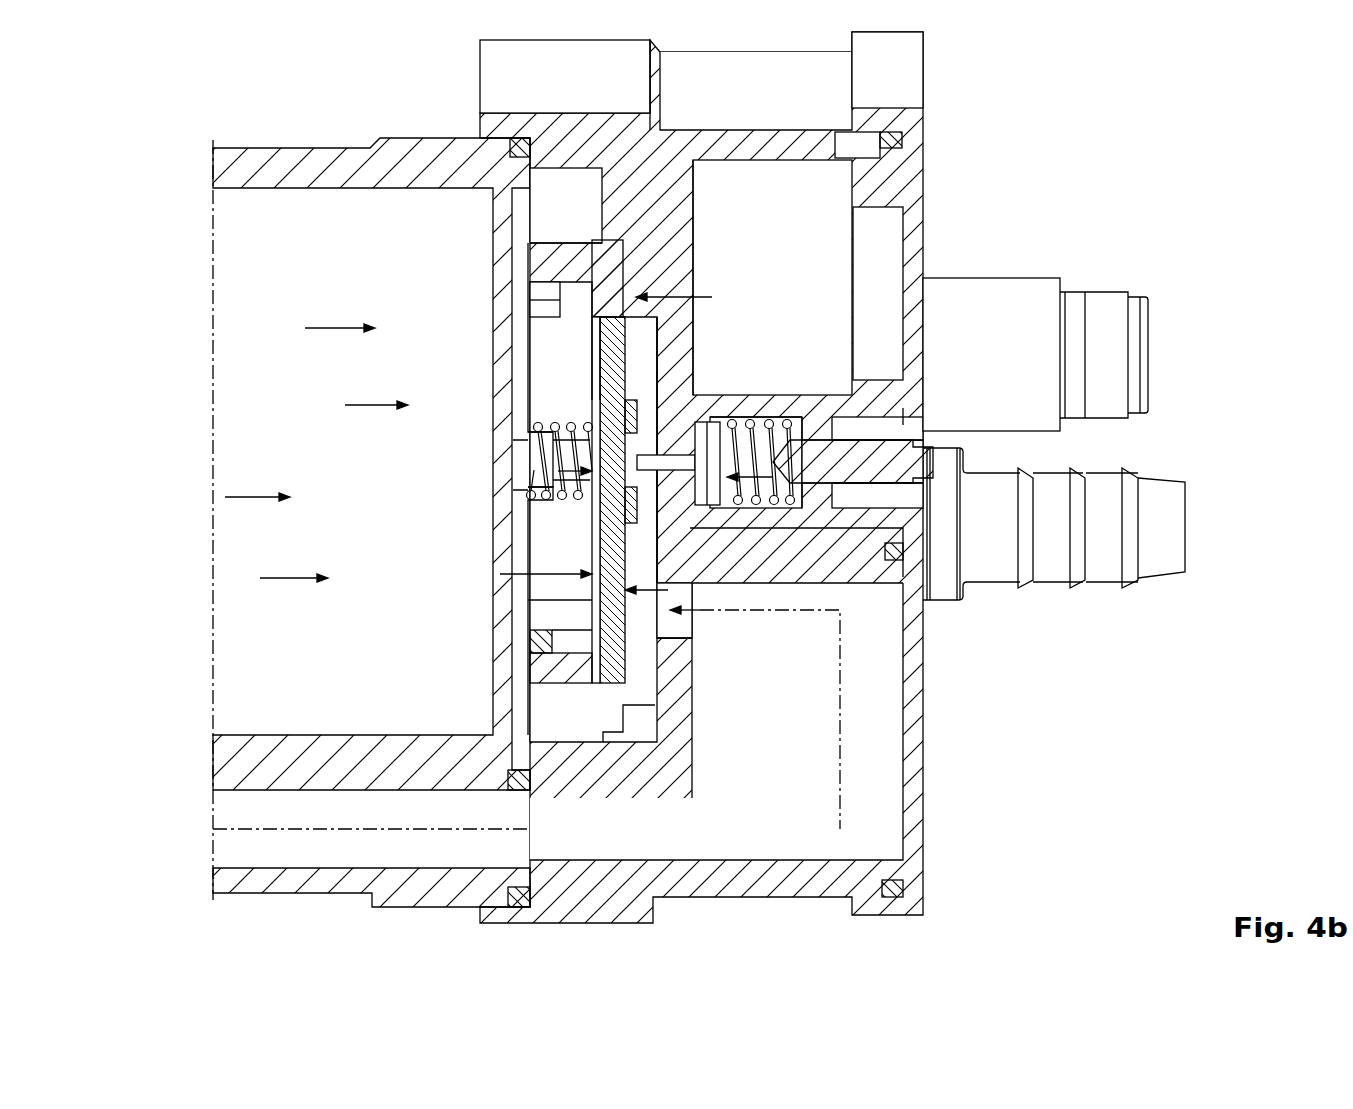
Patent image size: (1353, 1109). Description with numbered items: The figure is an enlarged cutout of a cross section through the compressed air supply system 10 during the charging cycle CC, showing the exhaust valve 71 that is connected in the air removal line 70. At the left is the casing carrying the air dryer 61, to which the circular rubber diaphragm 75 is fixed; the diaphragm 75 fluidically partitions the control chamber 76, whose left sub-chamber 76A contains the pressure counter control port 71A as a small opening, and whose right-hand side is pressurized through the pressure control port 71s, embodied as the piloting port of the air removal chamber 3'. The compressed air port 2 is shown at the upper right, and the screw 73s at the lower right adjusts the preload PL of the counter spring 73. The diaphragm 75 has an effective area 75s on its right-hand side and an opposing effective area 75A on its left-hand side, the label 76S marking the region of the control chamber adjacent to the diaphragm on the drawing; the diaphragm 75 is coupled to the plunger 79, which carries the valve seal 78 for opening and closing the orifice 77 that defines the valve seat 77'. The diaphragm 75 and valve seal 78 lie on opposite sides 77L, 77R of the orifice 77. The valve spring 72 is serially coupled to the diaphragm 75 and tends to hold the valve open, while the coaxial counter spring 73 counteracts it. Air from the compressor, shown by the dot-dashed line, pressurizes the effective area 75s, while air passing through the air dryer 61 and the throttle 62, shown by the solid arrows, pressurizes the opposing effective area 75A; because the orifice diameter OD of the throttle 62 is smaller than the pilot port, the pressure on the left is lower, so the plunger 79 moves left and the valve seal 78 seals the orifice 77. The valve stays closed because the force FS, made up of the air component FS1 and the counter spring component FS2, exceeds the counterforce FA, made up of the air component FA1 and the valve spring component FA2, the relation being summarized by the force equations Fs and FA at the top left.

The compressed air port 2 is at (1140, 352).
The air removal chamber 3' is at (772, 236).
The compressed air supply system 10 is at (990, 116).
The air dryer 61 is at (335, 197).
The throttle 62 is at (530, 473).
The air removal line 70 is at (645, 265).
The exhaust valve 71 is at (732, 378).
The pressure counter control port 71A is at (548, 290).
The pressure control port 71s is at (683, 624).
The valve spring 72 is at (550, 440).
The counter spring 73 is at (806, 483).
The screw 73s is at (933, 472).
The diaphragm 75 is at (585, 633).
The opposing effective area 75A is at (545, 300).
The effective area 75s is at (625, 637).
The control chamber 76 is at (586, 652).
The left sub-chamber 76A is at (548, 604).
The sleeve surface 76S is at (585, 655).
The orifice 77 is at (705, 488).
The valve seat 77' is at (521, 358).
The left side of orifice 77L is at (595, 358).
The right side of orifice 77R is at (692, 183).
The valve seal 78 is at (738, 428).
The plunger 79 is at (592, 505).
The counterforce FA is at (190, 35).
The first counterforce component FA1 is at (500, 576).
The second counterforce component FA2 is at (560, 478).
The force Fs is at (178, 85).
The force FS is at (712, 297).
The first force component FS1 is at (668, 612).
The second force component FS2 is at (765, 530).
The preload PL is at (903, 408).
The orifice diameter OD is at (520, 470).
The charging cycle CC is at (1281, 782).